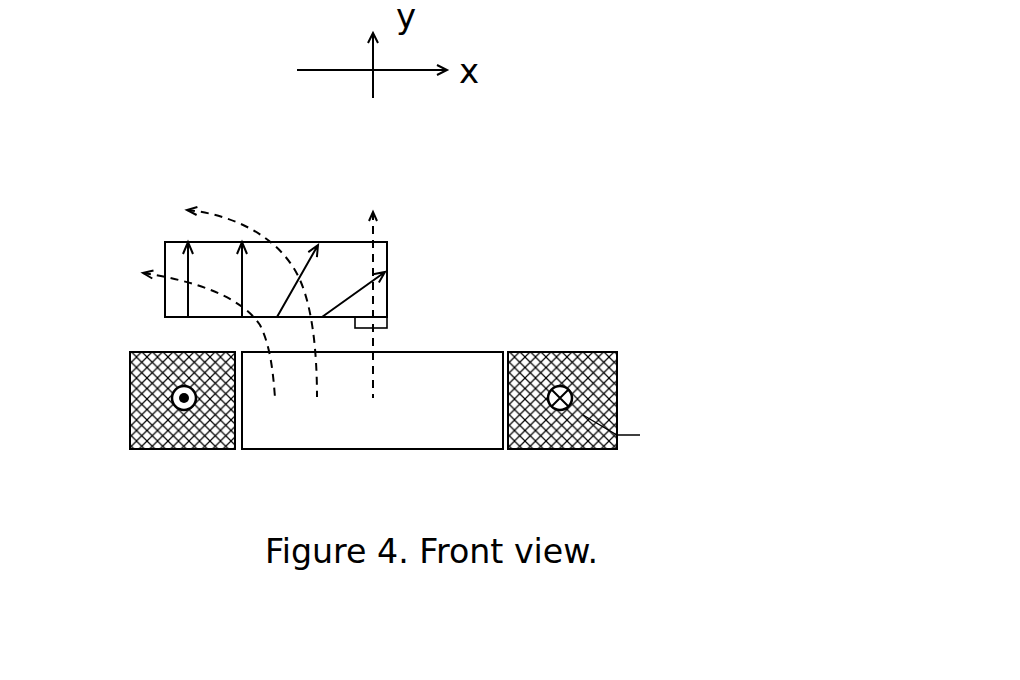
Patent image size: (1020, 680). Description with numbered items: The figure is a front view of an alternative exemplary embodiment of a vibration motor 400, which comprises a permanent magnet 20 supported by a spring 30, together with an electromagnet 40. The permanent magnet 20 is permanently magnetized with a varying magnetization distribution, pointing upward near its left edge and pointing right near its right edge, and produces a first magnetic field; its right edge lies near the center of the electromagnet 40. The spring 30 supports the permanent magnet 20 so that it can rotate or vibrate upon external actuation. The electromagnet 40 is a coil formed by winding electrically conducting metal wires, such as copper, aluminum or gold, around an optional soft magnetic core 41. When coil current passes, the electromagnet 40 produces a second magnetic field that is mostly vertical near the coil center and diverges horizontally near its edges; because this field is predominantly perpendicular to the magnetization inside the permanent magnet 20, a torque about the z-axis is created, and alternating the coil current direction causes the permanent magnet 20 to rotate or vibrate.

The vibration motor 400 is at (568, 107).
The permanent magnet 20 is at (442, 208).
The spring 30 is at (380, 322).
The electromagnet 40 is at (608, 352).
The soft magnetic core 41 is at (448, 428).